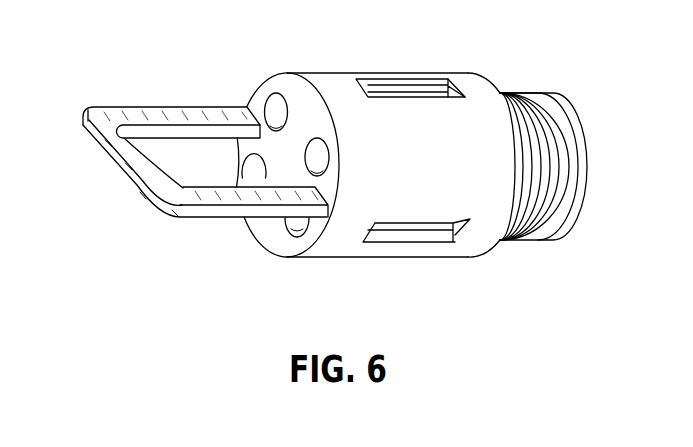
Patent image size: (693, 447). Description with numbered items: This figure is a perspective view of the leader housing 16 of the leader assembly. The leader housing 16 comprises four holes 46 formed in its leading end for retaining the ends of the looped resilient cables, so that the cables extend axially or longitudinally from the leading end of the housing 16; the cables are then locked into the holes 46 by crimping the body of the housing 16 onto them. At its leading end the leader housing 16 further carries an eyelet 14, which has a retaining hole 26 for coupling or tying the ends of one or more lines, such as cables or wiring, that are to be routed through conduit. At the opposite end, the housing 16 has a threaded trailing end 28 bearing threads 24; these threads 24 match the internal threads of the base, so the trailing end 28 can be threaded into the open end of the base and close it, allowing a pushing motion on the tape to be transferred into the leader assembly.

The eyelet 14 is at (120, 115).
The leader housing 16 is at (409, 73).
The threads 24 is at (562, 208).
The retaining hole 26 is at (150, 133).
The threaded trailing end 28 is at (567, 102).
The holes 46 is at (253, 170).